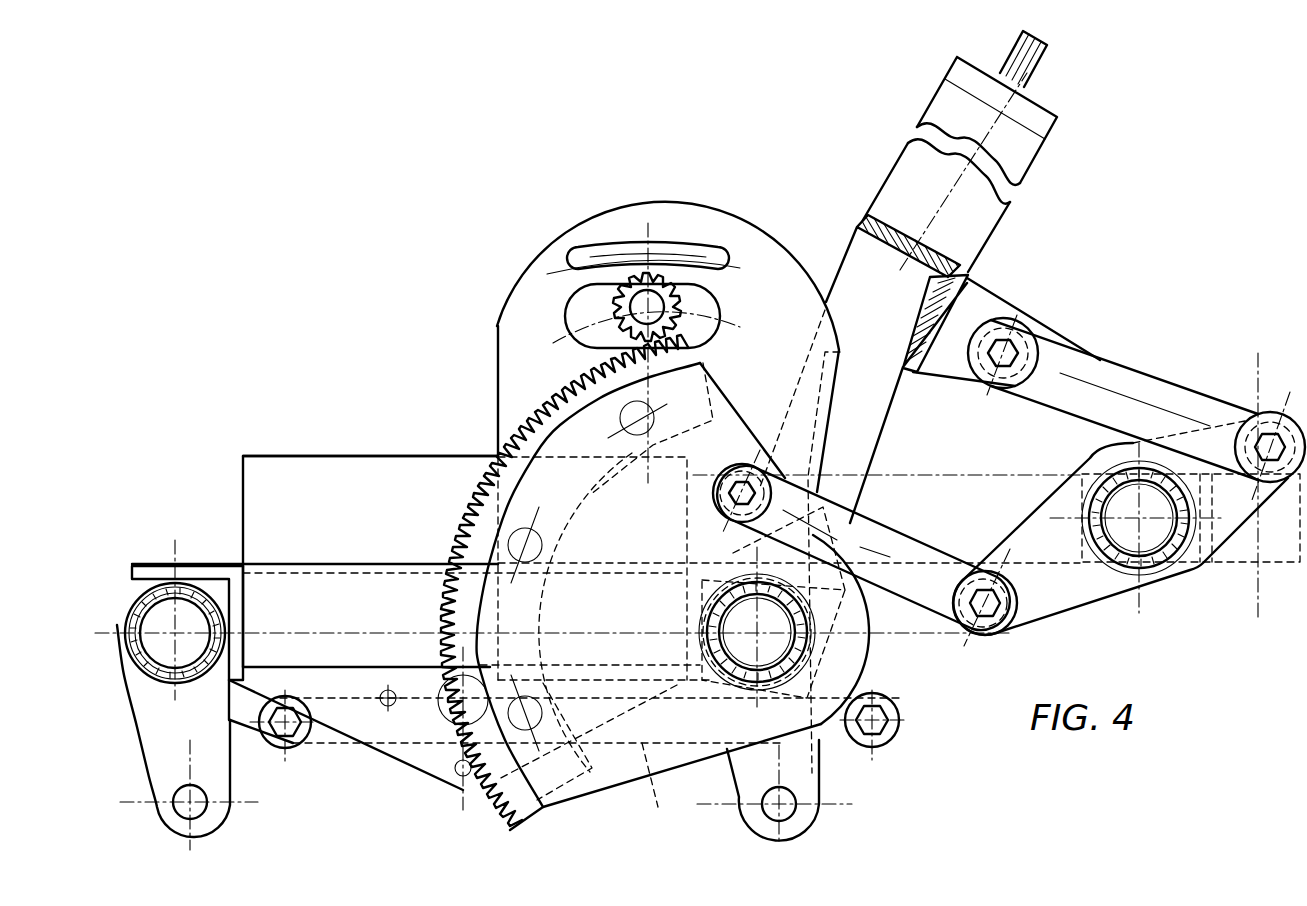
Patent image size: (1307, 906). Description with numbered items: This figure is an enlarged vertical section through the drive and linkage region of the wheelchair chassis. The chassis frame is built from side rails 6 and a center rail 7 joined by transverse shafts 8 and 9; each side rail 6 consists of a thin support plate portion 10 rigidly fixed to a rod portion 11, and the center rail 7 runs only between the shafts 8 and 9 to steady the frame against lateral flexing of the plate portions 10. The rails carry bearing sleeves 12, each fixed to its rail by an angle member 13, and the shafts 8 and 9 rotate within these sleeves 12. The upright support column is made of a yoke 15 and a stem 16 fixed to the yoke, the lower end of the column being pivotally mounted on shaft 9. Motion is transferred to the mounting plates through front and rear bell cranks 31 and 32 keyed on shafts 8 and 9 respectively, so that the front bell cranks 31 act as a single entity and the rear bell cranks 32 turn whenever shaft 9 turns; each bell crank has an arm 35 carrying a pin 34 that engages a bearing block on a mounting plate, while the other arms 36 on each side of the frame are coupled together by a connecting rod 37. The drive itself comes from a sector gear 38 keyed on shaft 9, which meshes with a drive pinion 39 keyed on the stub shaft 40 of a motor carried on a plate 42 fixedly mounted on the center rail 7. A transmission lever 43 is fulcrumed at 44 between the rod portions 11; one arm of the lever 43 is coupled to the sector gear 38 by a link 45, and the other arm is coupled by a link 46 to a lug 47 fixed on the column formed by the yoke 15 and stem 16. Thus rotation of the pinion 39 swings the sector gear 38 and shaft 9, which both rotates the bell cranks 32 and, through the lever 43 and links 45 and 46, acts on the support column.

The side rail 6 is at (362, 442).
The center rail 7 is at (315, 615).
The transverse shaft 8 is at (125, 630).
The transverse shaft 9 is at (773, 607).
The support plate portion 10 is at (466, 561).
The rod portion 11 is at (947, 493).
The bearing sleeve 12 is at (215, 580).
The angle member 13 is at (150, 565).
The yoke 15 is at (864, 494).
The stem 16 is at (995, 232).
The front bell crank 31 is at (329, 735).
The rear bell crank 32 is at (833, 630).
The pin 34 is at (200, 796).
The bell crank arm 35 is at (737, 770).
The bell crank arm 36 is at (293, 747).
The connecting rod 37 is at (529, 756).
The sector gear 38 is at (518, 428).
The drive pinion 39 is at (663, 283).
The stub shaft 40 is at (643, 300).
The plate 42 is at (683, 319).
The transmission lever 43 is at (1057, 600).
The fulcrum 44 is at (1152, 570).
The link 45 is at (850, 523).
The link 46 is at (1057, 353).
The lug 47 is at (977, 297).